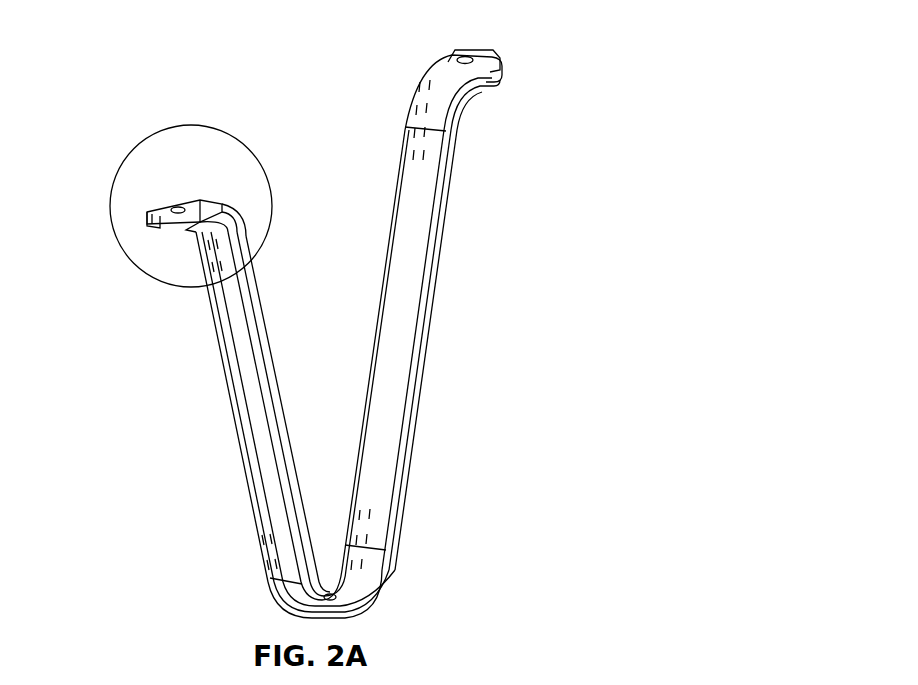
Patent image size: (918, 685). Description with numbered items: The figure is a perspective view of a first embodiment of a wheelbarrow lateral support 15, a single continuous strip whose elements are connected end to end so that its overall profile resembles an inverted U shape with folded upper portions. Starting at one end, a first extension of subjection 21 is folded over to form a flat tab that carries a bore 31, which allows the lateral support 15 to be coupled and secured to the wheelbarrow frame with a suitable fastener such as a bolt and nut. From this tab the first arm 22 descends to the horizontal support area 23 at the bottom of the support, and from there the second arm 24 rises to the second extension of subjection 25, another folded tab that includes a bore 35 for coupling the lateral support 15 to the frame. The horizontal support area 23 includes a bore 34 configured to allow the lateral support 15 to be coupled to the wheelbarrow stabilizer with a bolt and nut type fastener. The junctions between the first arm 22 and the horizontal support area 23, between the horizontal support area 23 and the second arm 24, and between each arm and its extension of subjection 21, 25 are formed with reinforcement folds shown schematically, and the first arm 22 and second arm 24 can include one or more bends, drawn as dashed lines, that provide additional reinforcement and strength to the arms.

The lateral support 15 is at (345, 314).
The first extension of subjection 21 is at (166, 206).
The first arm 22 is at (263, 434).
The horizontal support area 23 is at (346, 597).
The second arm 24 is at (403, 362).
The second extension of subjection 25 is at (496, 82).
The bore 31 is at (182, 203).
The bore 34 is at (325, 596).
The bore 35 is at (470, 58).